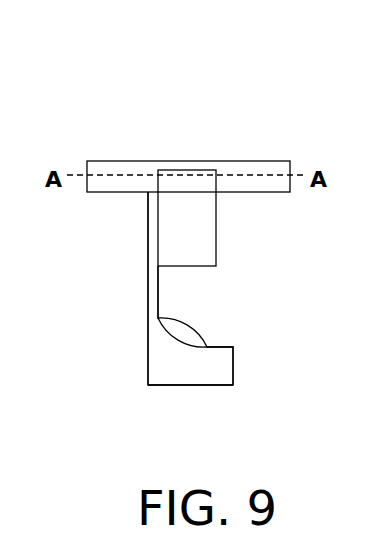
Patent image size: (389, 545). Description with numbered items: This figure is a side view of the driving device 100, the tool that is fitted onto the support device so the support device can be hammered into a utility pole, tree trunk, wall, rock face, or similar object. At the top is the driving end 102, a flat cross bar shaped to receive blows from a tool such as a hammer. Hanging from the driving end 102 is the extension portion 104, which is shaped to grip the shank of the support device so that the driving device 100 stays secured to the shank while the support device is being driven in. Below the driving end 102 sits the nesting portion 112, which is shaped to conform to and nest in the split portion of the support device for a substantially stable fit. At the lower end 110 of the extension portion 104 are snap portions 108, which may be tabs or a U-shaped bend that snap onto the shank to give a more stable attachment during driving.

The driving device 100 is at (217, 106).
The driving end 102 is at (197, 161).
The extension portion 104 is at (148, 288).
The snap portions 108 is at (233, 347).
The lower end 110 is at (148, 363).
The nesting portion 112 is at (216, 218).